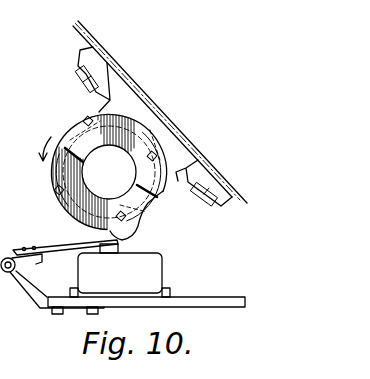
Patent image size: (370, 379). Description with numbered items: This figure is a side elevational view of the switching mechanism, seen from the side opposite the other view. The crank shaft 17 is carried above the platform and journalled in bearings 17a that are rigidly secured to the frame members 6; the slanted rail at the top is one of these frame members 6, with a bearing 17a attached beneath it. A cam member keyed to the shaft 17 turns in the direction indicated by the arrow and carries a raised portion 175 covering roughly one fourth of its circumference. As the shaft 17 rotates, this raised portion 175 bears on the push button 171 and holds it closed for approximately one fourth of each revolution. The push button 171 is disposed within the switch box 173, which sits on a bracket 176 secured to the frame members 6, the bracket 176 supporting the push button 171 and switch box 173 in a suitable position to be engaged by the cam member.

The frame members 6 is at (86, 30).
The crank shaft 17 is at (125, 149).
The bearings 17a is at (176, 181).
The push button 171 is at (121, 243).
The switch box 173 is at (120, 275).
The raised portion 175 is at (50, 204).
The bracket 176 is at (43, 313).